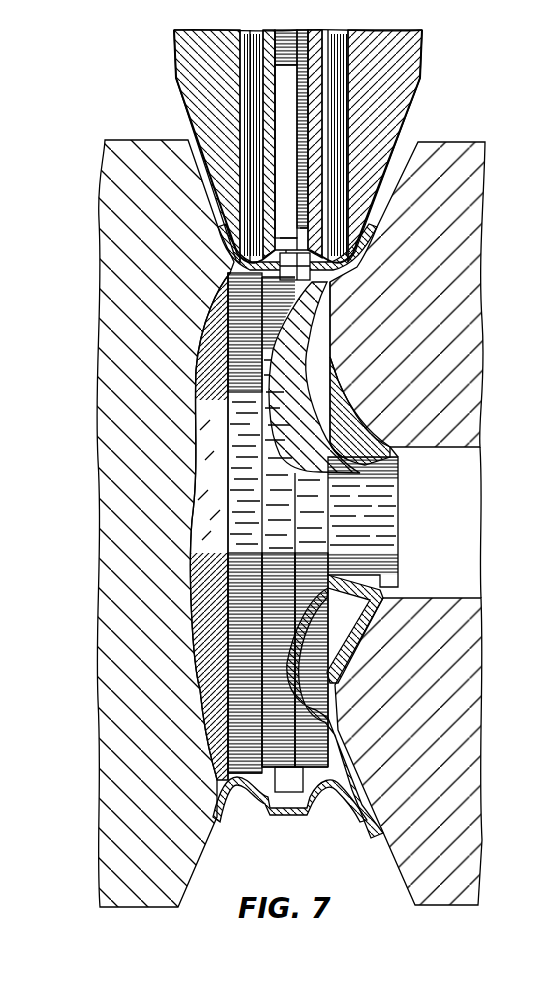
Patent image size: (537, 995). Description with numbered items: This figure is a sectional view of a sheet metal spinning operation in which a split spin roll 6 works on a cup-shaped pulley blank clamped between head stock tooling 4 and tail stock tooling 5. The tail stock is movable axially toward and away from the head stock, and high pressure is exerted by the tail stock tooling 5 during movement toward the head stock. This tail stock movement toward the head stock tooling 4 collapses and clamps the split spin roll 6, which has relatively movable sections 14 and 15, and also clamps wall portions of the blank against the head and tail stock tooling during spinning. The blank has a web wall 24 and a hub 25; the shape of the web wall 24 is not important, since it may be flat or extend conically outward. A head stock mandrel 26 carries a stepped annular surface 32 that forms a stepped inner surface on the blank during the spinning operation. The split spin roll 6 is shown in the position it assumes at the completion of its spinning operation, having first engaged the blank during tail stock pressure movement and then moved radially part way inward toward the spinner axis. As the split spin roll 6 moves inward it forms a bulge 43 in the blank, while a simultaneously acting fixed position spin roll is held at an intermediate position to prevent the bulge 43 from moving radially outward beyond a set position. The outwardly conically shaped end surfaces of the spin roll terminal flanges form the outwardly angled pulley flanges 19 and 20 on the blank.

The head stock tooling 4 is at (140, 484).
The tail stock tooling 5 is at (446, 362).
The split spin roll 6 is at (305, 144).
The relatively movable section 14 is at (203, 85).
The relatively movable section 15 is at (387, 100).
The outwardly angled pulley flange 19 is at (220, 240).
The outwardly angled pulley flange 20 is at (363, 236).
The web wall 24 is at (340, 383).
The hub 25 is at (380, 598).
The head stock mandrel 26 is at (312, 662).
The stepped annular surface 32 is at (259, 529).
The bulge 43 is at (303, 288).